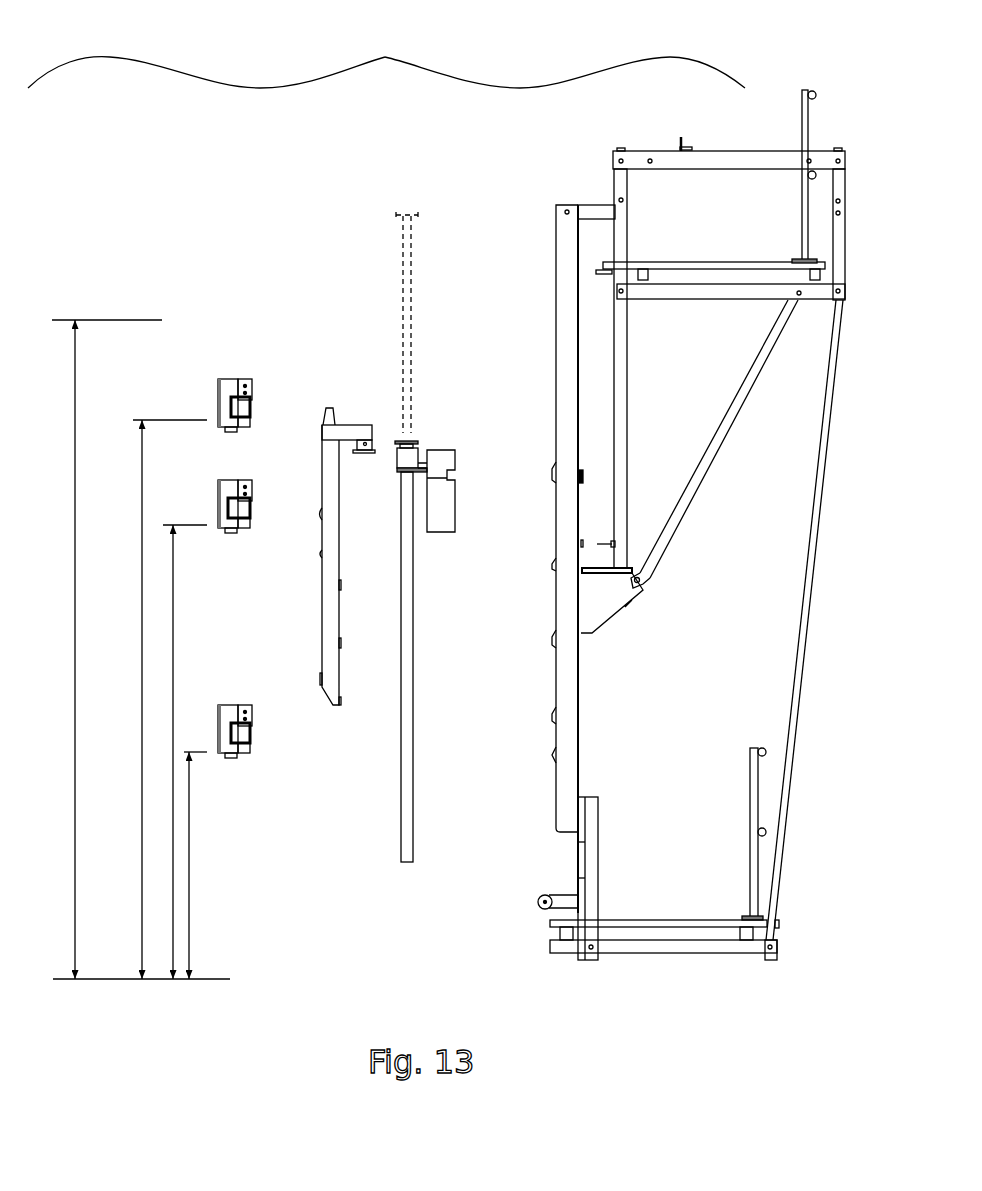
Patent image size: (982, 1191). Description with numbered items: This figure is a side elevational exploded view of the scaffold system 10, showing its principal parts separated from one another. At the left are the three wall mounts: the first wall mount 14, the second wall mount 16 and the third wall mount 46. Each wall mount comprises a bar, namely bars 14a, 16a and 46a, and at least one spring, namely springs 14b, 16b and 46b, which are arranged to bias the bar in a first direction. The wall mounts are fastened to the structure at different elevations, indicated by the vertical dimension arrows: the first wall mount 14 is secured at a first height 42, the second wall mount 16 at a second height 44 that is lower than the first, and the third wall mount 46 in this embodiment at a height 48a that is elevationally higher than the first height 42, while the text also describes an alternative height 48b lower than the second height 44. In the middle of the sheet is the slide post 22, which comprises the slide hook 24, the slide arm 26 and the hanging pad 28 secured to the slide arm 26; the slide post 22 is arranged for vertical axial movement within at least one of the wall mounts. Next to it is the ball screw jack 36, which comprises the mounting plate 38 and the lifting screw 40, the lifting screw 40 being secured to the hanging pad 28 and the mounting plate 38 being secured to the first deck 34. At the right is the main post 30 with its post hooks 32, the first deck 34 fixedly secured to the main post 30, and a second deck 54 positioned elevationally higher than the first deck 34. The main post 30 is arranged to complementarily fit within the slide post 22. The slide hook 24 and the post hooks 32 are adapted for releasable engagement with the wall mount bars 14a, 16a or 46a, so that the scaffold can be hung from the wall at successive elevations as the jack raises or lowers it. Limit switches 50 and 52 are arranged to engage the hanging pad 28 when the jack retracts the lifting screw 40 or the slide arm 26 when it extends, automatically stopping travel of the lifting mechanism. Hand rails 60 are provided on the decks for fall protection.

The scaffold system 10 is at (385, 57).
The first wall mount 14 is at (253, 393).
The first wall mount bar 14a is at (238, 405).
The springs of first wall mount 14b is at (241, 385).
The second wall mount 16 is at (253, 497).
The second wall mount bar 16a is at (238, 508).
The springs of second wall mount 16b is at (241, 486).
The slide post 22 is at (355, 613).
The slide hook 24 is at (318, 480).
The slide arm 26 is at (348, 427).
The hanging pad 28 is at (370, 453).
The main post 30 is at (568, 318).
The post hooks 32 is at (553, 482).
The first deck 34 is at (643, 918).
The ball screw jack 36 is at (425, 445).
The mounting plate 38 is at (400, 472).
The lifting screw 40 is at (409, 443).
The first height 42 is at (142, 488).
The second height 44 is at (173, 632).
The third wall mount 46 is at (253, 723).
The third wall mount bar 46a is at (238, 734).
The springs of third wall mount 46b is at (241, 711).
The third height 48a is at (75, 382).
The third height 48b is at (189, 868).
The limit switch 50 is at (612, 543).
The limit switch 52 is at (610, 275).
The second deck 54 is at (673, 262).
The hand rails 60 is at (813, 98).